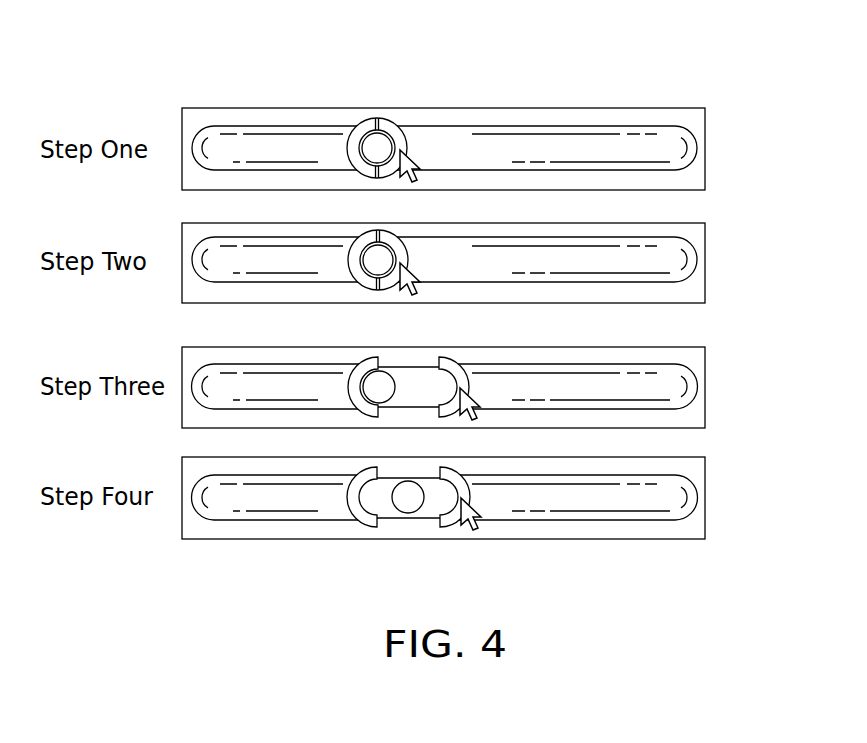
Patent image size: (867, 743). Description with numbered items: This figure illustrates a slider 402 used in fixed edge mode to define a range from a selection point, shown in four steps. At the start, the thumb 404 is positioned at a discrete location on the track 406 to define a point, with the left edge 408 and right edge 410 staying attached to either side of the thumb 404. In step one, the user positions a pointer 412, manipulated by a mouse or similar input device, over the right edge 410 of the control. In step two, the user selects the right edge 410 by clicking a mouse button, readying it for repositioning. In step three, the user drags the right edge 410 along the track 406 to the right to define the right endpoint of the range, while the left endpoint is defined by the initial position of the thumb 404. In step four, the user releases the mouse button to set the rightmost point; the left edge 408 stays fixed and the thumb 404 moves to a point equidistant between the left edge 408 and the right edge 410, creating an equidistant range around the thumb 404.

The slider 402 is at (467, 307).
The thumb 404 is at (378, 132).
The track 406 is at (536, 148).
The left edge 408 is at (358, 525).
The right edge 410 is at (452, 533).
The pointer 412 is at (422, 143).